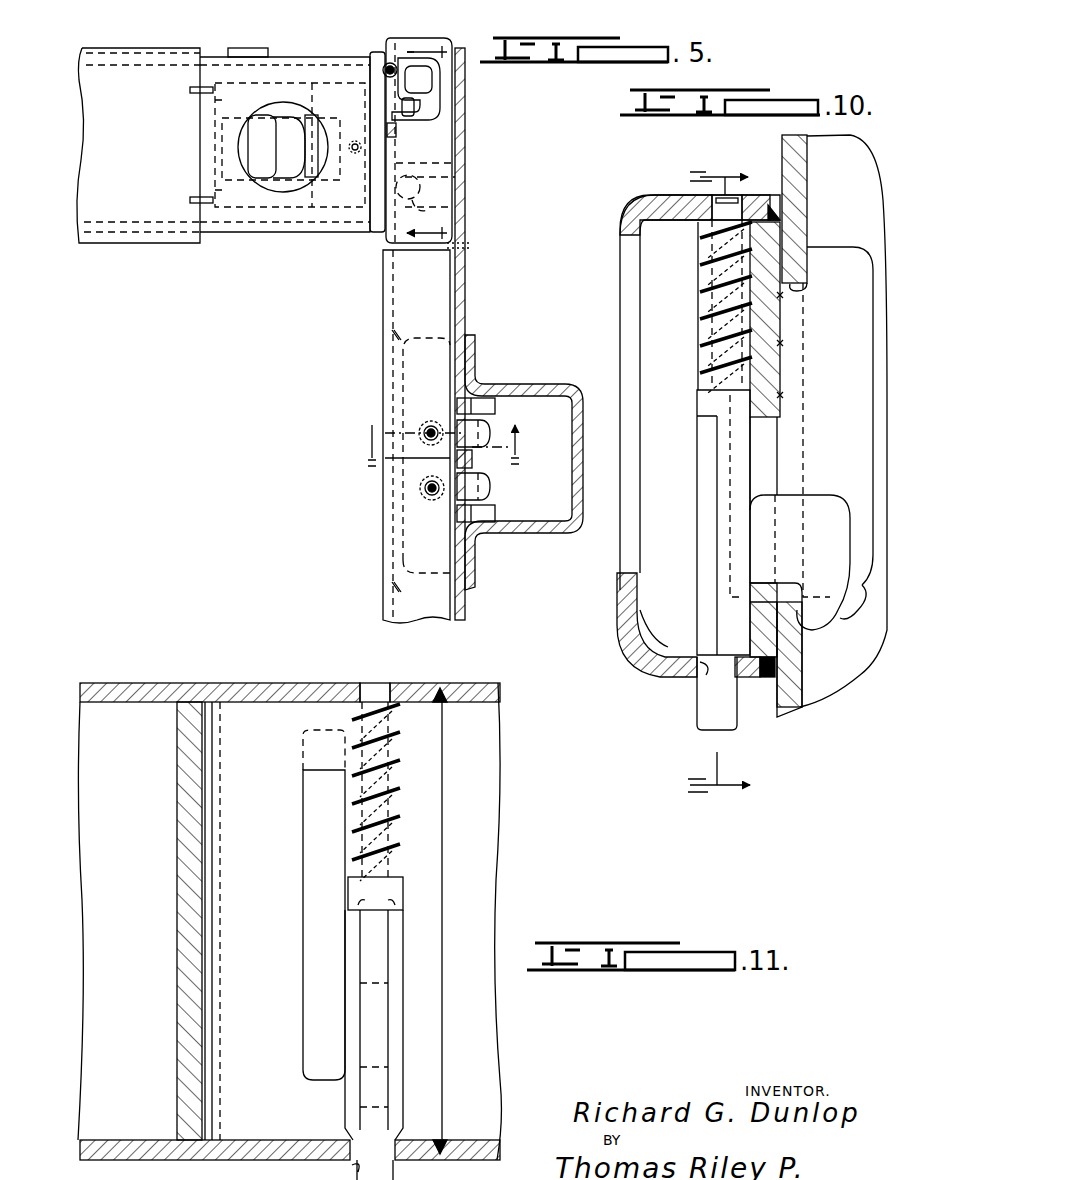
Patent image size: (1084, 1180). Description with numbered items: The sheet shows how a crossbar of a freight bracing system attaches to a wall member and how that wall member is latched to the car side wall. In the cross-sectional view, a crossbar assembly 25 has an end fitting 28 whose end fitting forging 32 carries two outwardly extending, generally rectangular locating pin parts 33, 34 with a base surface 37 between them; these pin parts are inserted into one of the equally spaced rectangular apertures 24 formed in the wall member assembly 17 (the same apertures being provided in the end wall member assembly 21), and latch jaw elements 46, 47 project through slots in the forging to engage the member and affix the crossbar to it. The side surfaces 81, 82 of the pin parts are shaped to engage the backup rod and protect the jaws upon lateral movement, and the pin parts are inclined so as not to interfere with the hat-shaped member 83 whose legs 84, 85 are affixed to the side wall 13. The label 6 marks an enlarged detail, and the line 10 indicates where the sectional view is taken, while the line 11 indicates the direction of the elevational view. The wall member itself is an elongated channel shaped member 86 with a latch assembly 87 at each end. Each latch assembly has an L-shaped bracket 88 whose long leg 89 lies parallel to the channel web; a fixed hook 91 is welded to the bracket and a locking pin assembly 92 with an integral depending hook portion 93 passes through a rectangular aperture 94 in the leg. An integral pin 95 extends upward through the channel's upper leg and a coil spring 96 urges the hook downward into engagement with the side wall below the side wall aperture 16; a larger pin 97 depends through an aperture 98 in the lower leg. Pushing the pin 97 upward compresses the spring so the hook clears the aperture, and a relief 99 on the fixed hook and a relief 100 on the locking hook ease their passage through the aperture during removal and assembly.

In FIG. 5, the door 6 is at (423, 148).
In FIG. 5, the section line 10— 10 is at (447, 445).
In FIG. 10, the line 11— 11 is at (736, 484).
In FIG. 10, the side wall 13 is at (790, 150).
In FIG. 10, the apertures 16 is at (808, 288).
In FIG. 5, the wall member assembly 17 is at (383, 325).
In FIG. 10, the wall member assembly 17 is at (612, 602).
In FIG. 11, the wall member assembly 17 is at (125, 680).
In FIG. 5, the end wall member assembly 21 is at (383, 550).
In FIG. 11, the end wall member assembly 21 is at (492, 682).
In FIG. 5, the rectangular apertures 24 is at (397, 58).
In FIG. 10, the rectangular apertures 24 is at (620, 265).
In FIG. 5, the crossbar assembly 25 is at (150, 243).
In FIG. 5, the end fitting 28 is at (285, 232).
In FIG. 5, the end fitting forging 32 is at (378, 52).
In FIG. 5, the locating pin part 33 is at (453, 206).
In FIG. 5, the locating pin part 34 is at (440, 72).
In FIG. 5, the base surface 37 is at (447, 130).
In FIG. 5, the jaw element 46 is at (455, 178).
In FIG. 5, the jaw element 47 is at (430, 98).
In FIG. 5, the side surface 81 is at (453, 163).
In FIG. 5, the side surface 82 is at (398, 125).
In FIG. 5, the hat-shaped member 83 is at (547, 384).
In FIG. 5, the leg 84 is at (472, 340).
In FIG. 5, the leg 85 is at (475, 577).
In FIG. 5, the channel shaped member 86 is at (383, 290).
In FIG. 10, the channel shaped member 86 is at (625, 200).
In FIG. 11, the channel shaped member 86 is at (225, 684).
In FIG. 5, the latch assembly 87 is at (500, 402).
In FIG. 10, the latch assembly 87 is at (830, 245).
In FIG. 11, the latch assembly 87 is at (300, 820).
In FIG. 5, the L-shaped bracket 88 is at (403, 360).
In FIG. 11, the L-shaped bracket 88 is at (180, 945).
In FIG. 5, the long leg 89 is at (403, 378).
In FIG. 5, the fixed hook 91 is at (494, 398).
In FIG. 10, the fixed hook 91 is at (856, 324).
In FIG. 10, the locking pin assembly 92 is at (695, 512).
In FIG. 11, the locking pin assembly 92 is at (345, 1105).
In FIG. 5, the hook portion 93 is at (490, 430).
In FIG. 10, the hook portion 93 is at (828, 537).
In FIG. 11, the hook portion 93 is at (392, 1045).
In FIG. 10, the rectangular aperture 94 is at (767, 443).
In FIG. 11, the rectangular aperture 94 is at (392, 912).
In FIG. 10, the pin 95 is at (700, 314).
In FIG. 11, the pin 95 is at (400, 770).
In FIG. 10, the coil spring 96 is at (705, 265).
In FIG. 11, the coil spring 96 is at (402, 742).
In FIG. 10, the pin 97 is at (722, 735).
In FIG. 11, the pin 97 is at (425, 1170).
In FIG. 10, the aperture 98 is at (700, 672).
In FIG. 11, the aperture 98 is at (350, 1168).
In FIG. 10, the relief 99 is at (808, 620).
In FIG. 10, the relief 100 is at (807, 647).
In FIG. 11, the relief 100 is at (405, 1092).